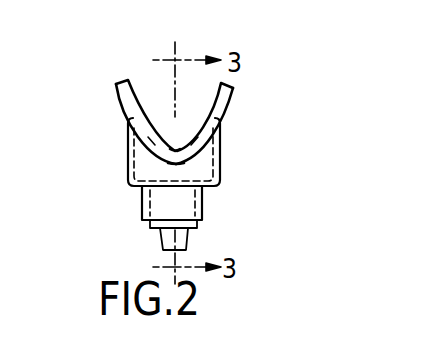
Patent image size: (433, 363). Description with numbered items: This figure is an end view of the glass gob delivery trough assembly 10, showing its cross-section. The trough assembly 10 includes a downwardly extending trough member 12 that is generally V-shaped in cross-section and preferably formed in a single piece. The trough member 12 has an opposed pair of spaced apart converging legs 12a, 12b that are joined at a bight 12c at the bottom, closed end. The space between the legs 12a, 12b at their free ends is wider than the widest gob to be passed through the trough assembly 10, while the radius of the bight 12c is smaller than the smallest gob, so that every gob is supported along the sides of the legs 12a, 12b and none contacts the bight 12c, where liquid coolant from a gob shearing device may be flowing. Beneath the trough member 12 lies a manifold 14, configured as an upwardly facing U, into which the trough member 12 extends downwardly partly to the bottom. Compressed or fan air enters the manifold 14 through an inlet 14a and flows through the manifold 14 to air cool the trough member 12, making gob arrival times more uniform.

The glass gob delivery trough assembly 10 is at (258, 167).
The trough member 12 is at (178, 91).
The leg 12a is at (237, 97).
The leg 12b is at (121, 85).
The bight 12c is at (173, 146).
The manifold 14 is at (128, 160).
The inlet 14a is at (204, 207).